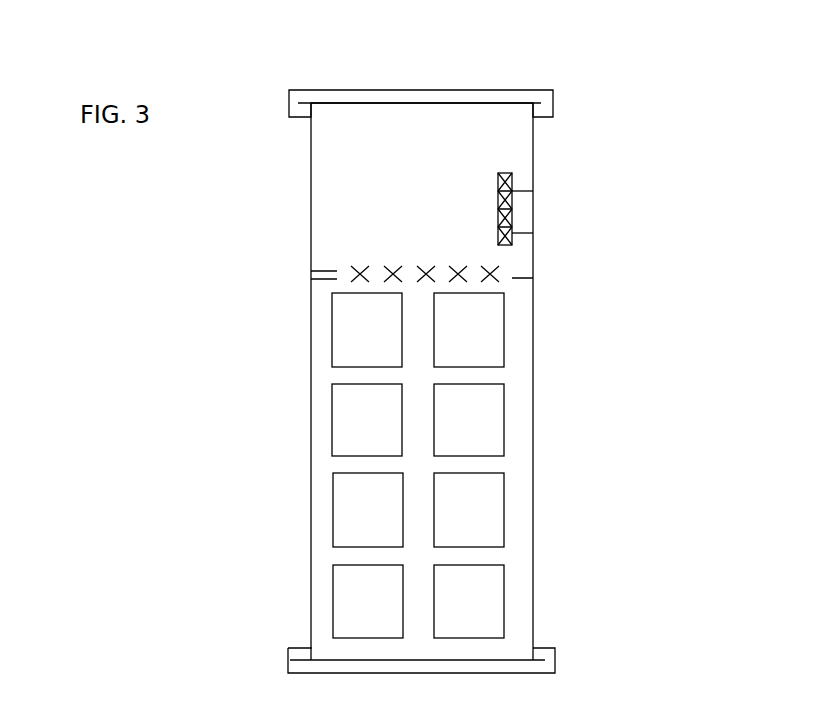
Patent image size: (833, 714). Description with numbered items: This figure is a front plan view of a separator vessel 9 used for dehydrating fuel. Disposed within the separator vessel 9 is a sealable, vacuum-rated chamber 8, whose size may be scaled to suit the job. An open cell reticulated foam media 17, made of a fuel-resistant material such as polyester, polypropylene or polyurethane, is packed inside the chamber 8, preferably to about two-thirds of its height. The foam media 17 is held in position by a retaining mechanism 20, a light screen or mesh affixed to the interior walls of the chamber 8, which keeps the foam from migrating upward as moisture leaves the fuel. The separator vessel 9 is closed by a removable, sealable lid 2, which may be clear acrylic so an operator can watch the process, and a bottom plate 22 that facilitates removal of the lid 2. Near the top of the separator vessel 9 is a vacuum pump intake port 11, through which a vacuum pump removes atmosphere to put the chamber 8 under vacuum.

The lid 2 is at (455, 89).
The bottom plate 22 is at (497, 102).
The chamber 8 is at (478, 165).
The separator vessel 9 is at (535, 512).
The vacuum pump intake port 11 is at (512, 217).
The retaining mechanism 20 is at (502, 272).
The open cell reticulated foam media 17 is at (480, 415).